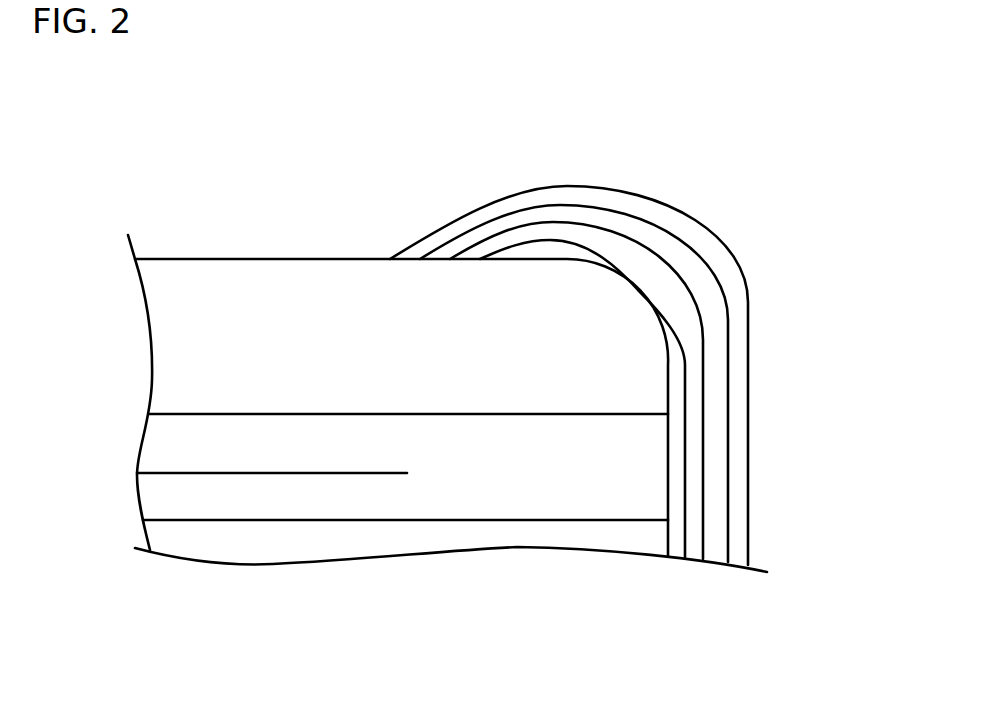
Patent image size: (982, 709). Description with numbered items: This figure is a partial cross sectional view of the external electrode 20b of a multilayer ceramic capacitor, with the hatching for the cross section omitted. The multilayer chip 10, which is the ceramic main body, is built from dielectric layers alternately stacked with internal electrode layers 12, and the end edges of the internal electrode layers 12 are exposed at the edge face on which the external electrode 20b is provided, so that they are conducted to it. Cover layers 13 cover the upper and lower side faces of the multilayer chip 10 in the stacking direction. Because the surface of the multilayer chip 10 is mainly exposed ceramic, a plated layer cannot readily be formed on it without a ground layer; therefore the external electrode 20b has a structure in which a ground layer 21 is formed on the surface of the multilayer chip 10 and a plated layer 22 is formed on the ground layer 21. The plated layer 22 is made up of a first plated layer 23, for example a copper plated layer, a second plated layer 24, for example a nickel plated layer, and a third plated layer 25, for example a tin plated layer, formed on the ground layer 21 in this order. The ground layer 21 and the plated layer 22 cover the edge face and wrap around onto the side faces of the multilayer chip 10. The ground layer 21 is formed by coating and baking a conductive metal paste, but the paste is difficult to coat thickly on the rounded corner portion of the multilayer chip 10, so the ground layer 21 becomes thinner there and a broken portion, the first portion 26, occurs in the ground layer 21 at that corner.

The multilayer chip 10 is at (166, 217).
The internal electrode layers 12 is at (237, 473).
The cover layers 13 is at (268, 293).
The external electrode 20b is at (668, 375).
The ground layer 21 is at (675, 452).
The plated layer 22 is at (639, 375).
The first plated layer 23 is at (693, 406).
The second plated layer 24 is at (718, 368).
The third plated layer 25 is at (613, 375).
The first portion 26 is at (642, 288).